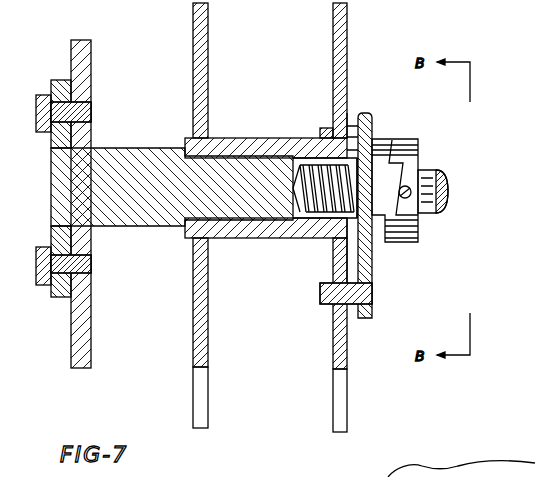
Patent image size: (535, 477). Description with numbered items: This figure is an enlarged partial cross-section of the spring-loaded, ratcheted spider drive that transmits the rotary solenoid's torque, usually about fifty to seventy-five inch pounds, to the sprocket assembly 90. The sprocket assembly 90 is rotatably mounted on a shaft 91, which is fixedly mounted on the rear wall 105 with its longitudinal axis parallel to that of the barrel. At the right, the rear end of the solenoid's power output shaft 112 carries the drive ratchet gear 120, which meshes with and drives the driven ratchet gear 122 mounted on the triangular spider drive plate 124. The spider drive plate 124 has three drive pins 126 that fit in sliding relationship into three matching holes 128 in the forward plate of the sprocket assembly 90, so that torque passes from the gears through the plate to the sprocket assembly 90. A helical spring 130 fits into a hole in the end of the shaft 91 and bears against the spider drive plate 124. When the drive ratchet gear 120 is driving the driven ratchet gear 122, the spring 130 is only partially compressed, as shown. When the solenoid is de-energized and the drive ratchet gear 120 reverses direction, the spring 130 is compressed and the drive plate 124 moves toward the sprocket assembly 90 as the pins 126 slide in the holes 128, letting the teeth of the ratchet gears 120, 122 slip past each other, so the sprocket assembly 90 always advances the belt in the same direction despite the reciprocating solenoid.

The sprocket assembly 90 is at (200, 347).
The shaft 91 is at (120, 150).
The rear wall 105 is at (92, 72).
The power output shaft 112 is at (440, 170).
The drive ratchet gear 120 is at (418, 232).
The driven ratchet gear 122 is at (390, 160).
The triangular spider drive plate 124 is at (373, 265).
The drive pins 126 is at (320, 133).
The holes 128 is at (333, 306).
The helical spring 130 is at (302, 240).